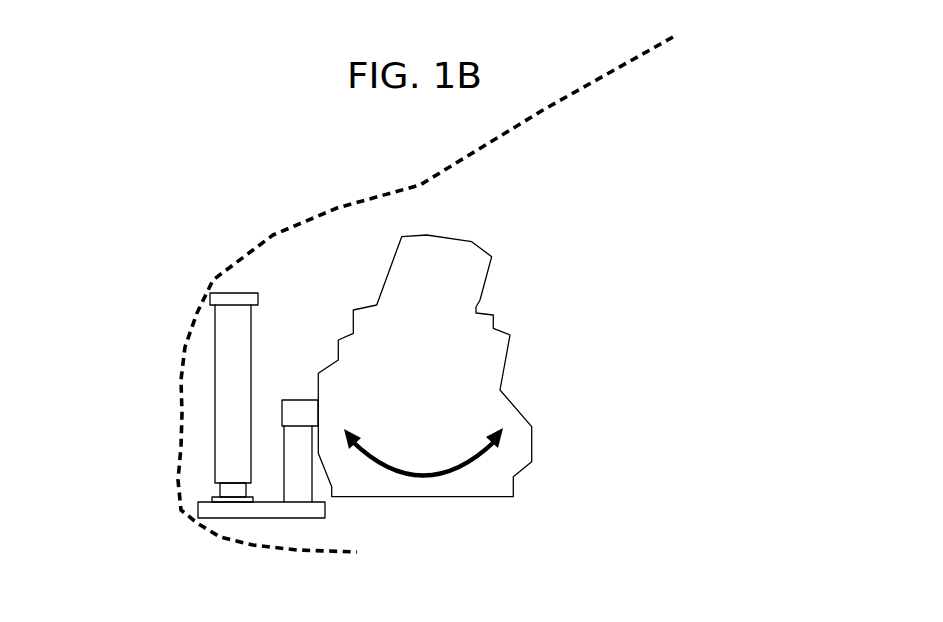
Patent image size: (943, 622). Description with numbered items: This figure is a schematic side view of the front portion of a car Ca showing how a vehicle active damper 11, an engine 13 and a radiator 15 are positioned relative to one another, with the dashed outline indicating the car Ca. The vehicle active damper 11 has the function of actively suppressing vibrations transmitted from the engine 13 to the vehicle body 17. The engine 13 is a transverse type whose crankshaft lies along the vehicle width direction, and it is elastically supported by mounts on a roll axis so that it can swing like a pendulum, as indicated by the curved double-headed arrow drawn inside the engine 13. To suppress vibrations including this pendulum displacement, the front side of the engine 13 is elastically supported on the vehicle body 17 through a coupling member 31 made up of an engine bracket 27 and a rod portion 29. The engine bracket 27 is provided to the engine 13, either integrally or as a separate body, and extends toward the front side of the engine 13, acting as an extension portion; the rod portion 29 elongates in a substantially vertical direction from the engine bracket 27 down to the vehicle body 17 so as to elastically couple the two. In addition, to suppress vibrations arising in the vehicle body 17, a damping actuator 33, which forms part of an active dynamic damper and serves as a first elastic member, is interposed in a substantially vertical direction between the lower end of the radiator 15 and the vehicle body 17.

The car Ca is at (557, 100).
The vehicle active damper 11 is at (284, 372).
The engine 13 is at (463, 300).
The radiator 15 is at (228, 357).
The vehicle body 17 is at (255, 512).
The engine bracket 27 is at (295, 413).
The rod portion 29 is at (298, 462).
The coupling member 31 is at (196, 450).
The damping actuator 33 is at (228, 492).